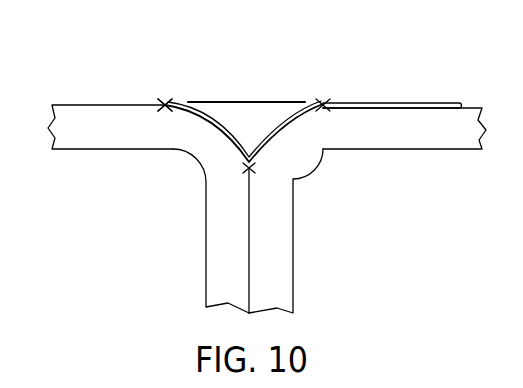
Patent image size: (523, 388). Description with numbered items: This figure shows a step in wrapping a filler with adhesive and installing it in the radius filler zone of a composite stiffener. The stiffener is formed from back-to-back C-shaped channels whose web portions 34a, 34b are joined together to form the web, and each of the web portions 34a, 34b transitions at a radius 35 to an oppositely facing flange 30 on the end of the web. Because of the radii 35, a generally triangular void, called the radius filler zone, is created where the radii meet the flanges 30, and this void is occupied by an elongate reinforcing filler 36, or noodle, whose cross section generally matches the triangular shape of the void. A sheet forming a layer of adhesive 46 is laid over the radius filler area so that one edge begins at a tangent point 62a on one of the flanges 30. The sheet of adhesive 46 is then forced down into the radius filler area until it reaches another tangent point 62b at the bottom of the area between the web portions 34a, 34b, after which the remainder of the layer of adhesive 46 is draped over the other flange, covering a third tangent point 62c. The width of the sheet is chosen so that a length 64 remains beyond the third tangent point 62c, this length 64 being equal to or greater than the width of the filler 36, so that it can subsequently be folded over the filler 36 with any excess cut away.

The flange 30 is at (90, 138).
The web portion 34a is at (227, 264).
The web portion 34b is at (275, 263).
The radius 35 is at (204, 128).
The filler 36 is at (245, 112).
The layer of adhesive 46 is at (174, 100).
The tangent point 62a is at (159, 85).
The tangent point 62b is at (230, 174).
The tangent point 62c is at (308, 86).
The length 64 is at (460, 95).